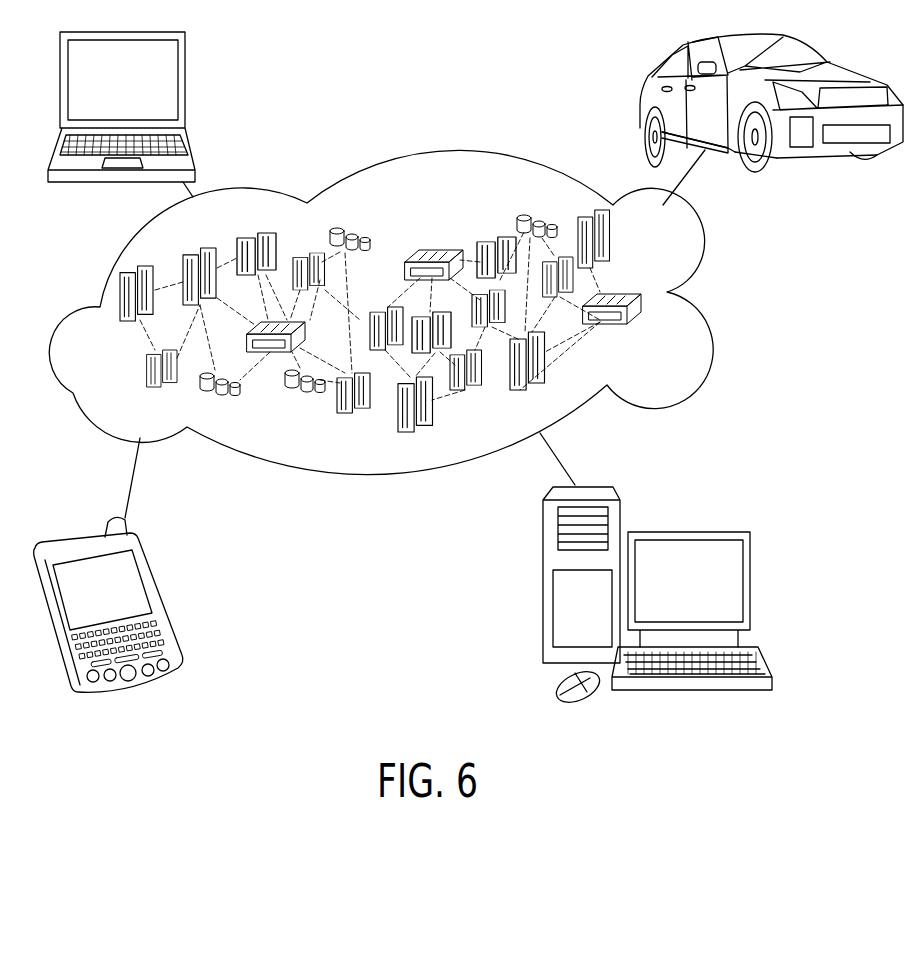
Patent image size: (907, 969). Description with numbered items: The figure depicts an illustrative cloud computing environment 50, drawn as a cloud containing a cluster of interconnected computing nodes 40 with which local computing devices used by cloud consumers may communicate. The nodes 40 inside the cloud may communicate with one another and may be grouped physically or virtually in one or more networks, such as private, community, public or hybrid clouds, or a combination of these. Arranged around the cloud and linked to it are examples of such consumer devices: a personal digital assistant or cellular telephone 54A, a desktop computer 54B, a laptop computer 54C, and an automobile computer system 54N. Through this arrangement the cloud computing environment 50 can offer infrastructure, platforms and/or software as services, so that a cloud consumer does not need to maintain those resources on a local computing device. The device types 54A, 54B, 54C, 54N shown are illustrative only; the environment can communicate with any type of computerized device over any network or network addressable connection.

The cloud computing nodes 40 is at (658, 342).
The cloud computing environment 50 is at (705, 246).
The personal digital assistant (PDA) or cellular telephone 54A is at (153, 578).
The desktop computer 54B is at (752, 580).
The laptop computer 54C is at (185, 84).
The automobile computer system 54N is at (815, 58).